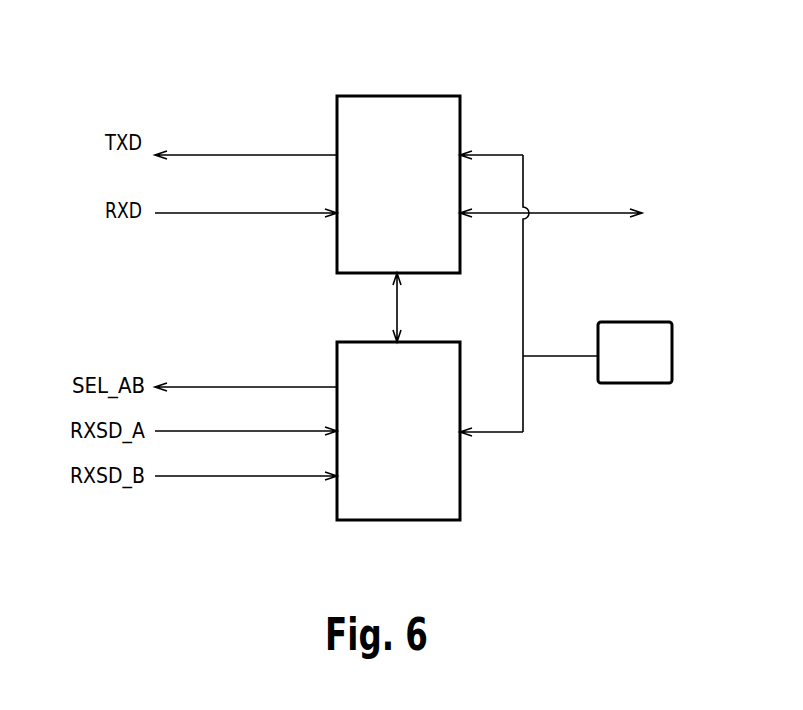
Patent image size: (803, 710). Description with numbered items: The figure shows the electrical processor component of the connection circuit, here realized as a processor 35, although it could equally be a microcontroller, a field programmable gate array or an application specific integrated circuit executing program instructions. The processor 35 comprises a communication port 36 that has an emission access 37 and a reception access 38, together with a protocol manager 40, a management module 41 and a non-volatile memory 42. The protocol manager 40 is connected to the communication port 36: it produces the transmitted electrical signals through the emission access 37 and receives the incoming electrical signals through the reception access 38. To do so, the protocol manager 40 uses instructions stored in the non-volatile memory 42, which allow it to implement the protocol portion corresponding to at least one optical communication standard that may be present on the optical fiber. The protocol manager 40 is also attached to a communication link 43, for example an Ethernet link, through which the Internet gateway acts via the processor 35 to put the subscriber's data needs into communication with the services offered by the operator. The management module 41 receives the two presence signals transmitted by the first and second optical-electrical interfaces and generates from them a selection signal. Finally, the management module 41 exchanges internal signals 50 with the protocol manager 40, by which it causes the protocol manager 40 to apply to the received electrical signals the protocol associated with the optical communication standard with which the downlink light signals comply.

The processor 35 is at (530, 112).
The communication port 36 is at (267, 237).
The emission access 37 is at (337, 152).
The reception access 38 is at (337, 217).
The protocol manager 40 is at (401, 95).
The management module 41 is at (400, 522).
The non-volatile memory 42 is at (637, 321).
The communication link 43 is at (582, 210).
The internal signals 50 is at (398, 307).